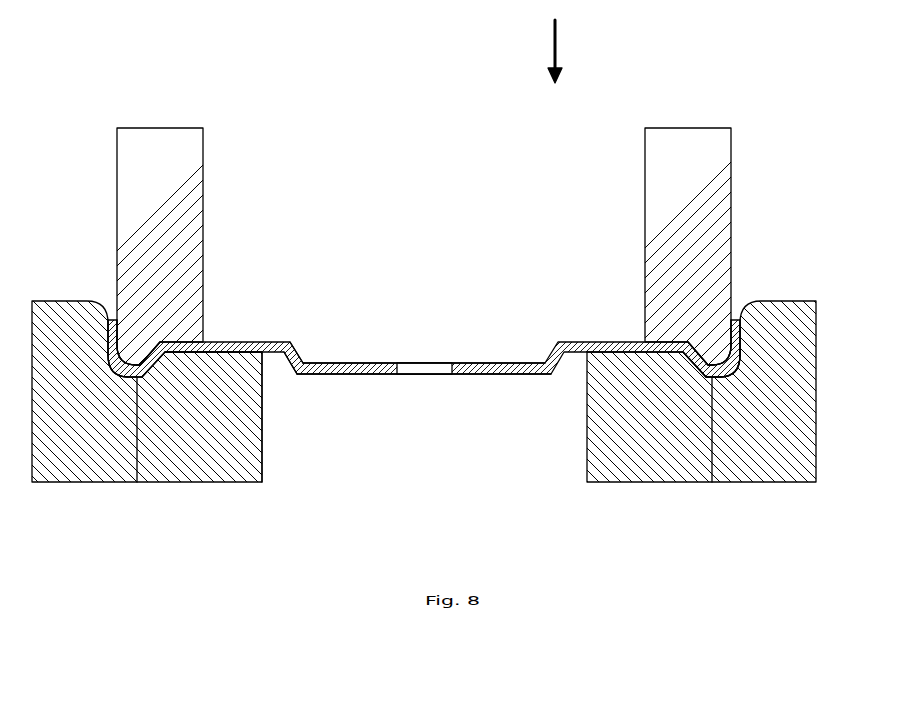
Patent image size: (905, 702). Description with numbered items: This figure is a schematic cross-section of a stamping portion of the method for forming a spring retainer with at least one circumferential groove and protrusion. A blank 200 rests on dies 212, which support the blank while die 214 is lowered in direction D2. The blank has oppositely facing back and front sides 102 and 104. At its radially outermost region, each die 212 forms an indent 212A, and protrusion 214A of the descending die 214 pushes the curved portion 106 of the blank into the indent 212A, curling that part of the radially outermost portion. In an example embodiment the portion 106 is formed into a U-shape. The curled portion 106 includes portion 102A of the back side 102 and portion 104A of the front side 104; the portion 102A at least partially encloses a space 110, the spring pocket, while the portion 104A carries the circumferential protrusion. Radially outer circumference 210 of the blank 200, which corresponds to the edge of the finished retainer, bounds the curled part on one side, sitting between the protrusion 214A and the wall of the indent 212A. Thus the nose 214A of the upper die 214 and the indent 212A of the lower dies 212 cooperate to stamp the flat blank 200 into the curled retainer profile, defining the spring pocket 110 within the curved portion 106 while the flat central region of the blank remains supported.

The die 214 is at (172, 128).
The radially outer circumference 210 is at (112, 320).
The space 110 is at (139, 344).
The back side 102 is at (478, 363).
The portion of side 102 102A is at (708, 355).
The protrusion 214A is at (728, 350).
The curved portion 106 is at (105, 378).
The die 212 is at (108, 438).
The portion of side 104 104A is at (145, 377).
The blank 200 is at (369, 380).
The front side 104 is at (497, 374).
The indent 212A is at (740, 377).
The direction D2 is at (553, 48).